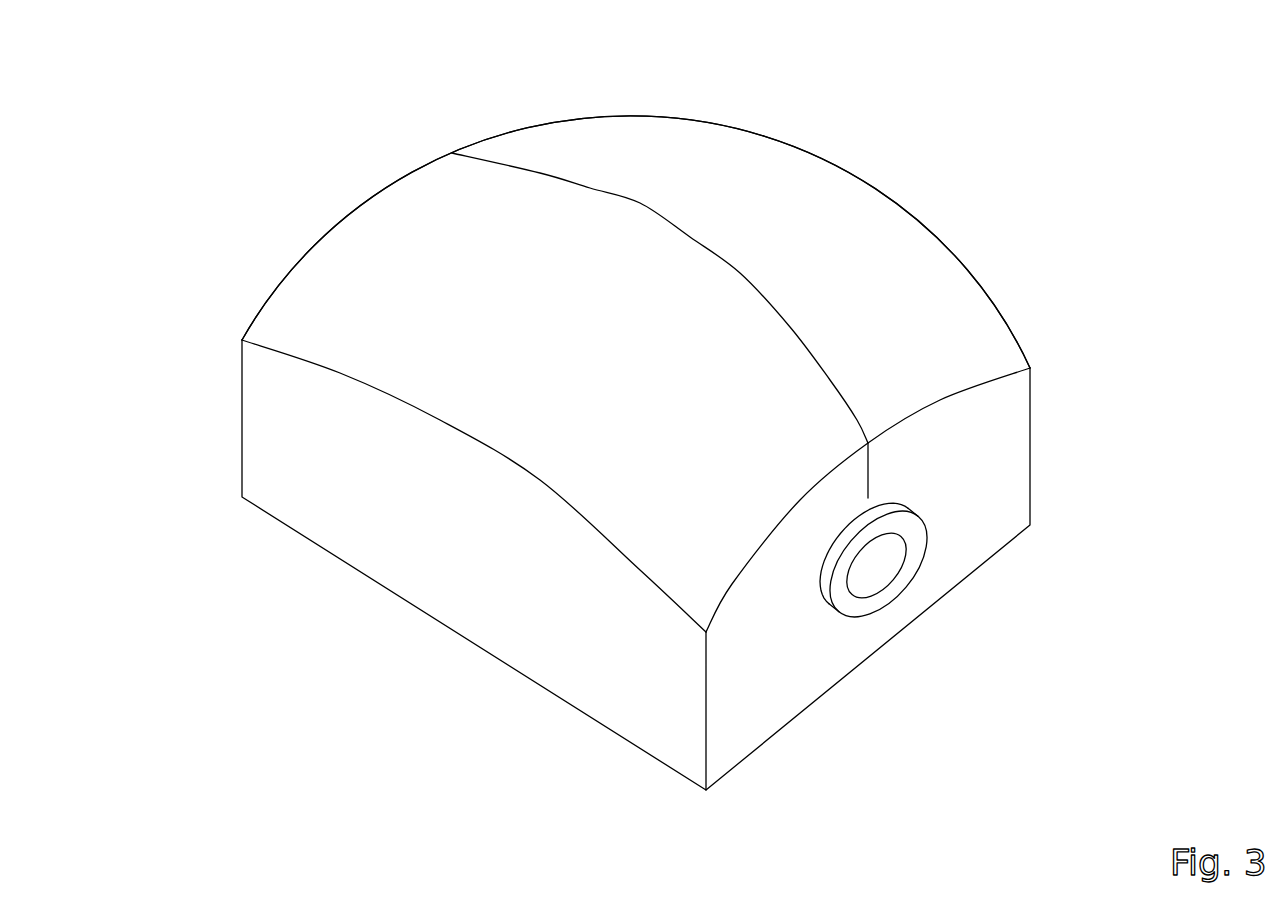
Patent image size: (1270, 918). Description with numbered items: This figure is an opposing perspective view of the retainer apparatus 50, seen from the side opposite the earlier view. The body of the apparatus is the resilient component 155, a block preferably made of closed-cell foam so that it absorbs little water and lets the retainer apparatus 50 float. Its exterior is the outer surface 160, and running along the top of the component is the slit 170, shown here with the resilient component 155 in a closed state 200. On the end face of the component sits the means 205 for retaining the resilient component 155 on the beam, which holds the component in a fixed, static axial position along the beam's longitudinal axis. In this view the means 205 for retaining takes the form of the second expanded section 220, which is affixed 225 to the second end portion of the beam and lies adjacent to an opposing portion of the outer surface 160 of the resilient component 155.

The retainer apparatus 50 is at (1105, 100).
The resilient component 155 is at (878, 190).
The outer surface 160 is at (628, 349).
The slit 170 is at (700, 236).
The closed state 200 is at (635, 411).
The means for retaining 205 is at (954, 627).
The second expanded section 220 is at (954, 627).
The affixed 225 is at (865, 592).